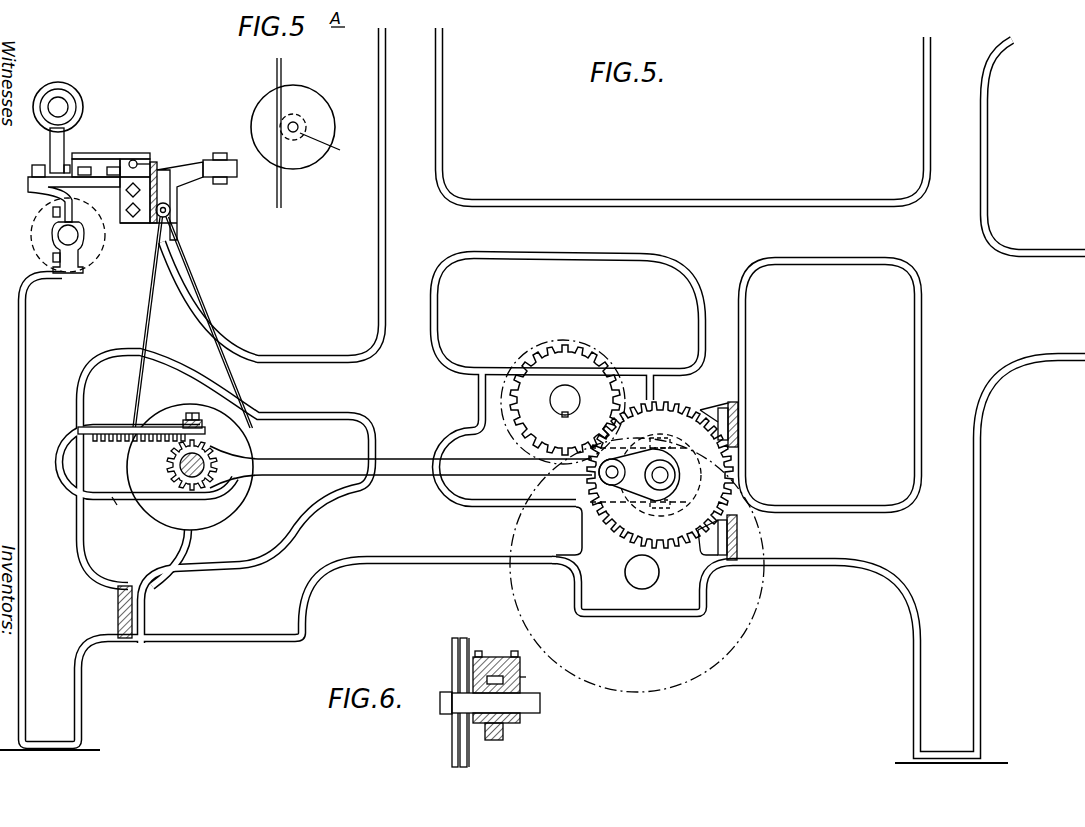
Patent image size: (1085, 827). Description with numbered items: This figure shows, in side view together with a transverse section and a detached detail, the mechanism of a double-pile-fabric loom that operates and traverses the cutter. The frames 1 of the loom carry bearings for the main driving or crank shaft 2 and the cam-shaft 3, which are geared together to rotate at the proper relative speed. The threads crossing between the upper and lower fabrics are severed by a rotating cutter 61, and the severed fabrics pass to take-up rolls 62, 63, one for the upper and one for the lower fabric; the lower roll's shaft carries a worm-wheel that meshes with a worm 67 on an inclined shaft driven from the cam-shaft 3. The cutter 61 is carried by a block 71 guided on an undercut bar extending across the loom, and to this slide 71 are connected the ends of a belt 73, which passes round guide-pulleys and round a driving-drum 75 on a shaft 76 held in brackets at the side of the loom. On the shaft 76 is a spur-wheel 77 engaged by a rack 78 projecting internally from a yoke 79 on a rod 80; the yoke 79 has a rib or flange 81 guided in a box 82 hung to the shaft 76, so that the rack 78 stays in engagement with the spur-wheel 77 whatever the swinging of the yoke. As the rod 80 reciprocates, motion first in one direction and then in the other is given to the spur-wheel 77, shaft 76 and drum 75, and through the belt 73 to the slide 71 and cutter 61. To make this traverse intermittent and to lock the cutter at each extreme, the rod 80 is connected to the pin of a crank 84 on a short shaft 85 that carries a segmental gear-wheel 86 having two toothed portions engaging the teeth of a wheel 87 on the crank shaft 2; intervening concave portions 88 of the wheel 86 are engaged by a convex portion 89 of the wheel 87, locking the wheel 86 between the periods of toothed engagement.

In FIG. 5, the frames 1 is at (542, 395).
In FIG. 5, the main driving or crank shaft 2 is at (565, 401).
In FIG. 5, the cam-shaft 3 is at (642, 572).
In FIG. 5a, the rotating cutter 61 is at (158, 168).
In FIG. 5a, the take-up roll 62 is at (69, 127).
In FIG. 5a, the take-up roll 63 is at (31, 232).
In FIG. 5a, the worm 67 is at (331, 148).
In FIG. 5a, the block (slide) 71 is at (140, 156).
In FIG. 5, the belt or band 73 is at (188, 322).
In FIG. 5, the driving-drum 75 is at (190, 467).
In FIG. 6, the driving-drum 75 is at (460, 711).
In FIG. 5, the shaft 76 is at (175, 480).
In FIG. 6, the shaft 76 is at (490, 703).
In FIG. 5, the spur-wheel 77 is at (176, 461).
In FIG. 6, the spur-wheel 77 is at (508, 725).
In FIG. 5, the rack 78 is at (139, 444).
In FIG. 6, the rack 78 is at (510, 656).
In FIG. 5, the yoke 79 is at (123, 508).
In FIG. 6, the yoke 79 is at (494, 740).
In FIG. 5, the rod 80 is at (414, 460).
In FIG. 5, the rib or flange 81 is at (141, 423).
In FIG. 6, the rib or flange 81 is at (508, 657).
In FIG. 6, the box 82 is at (532, 677).
In FIG. 5, the crank 84 is at (639, 475).
In FIG. 5, the short shaft 85 is at (660, 475).
In FIG. 5, the segmental gear-wheel 86 is at (660, 475).
In FIG. 5, the wheel 87 is at (565, 400).
In FIG. 5, the concave portions 88 is at (670, 481).
In FIG. 5, the convex portion 89 is at (604, 400).